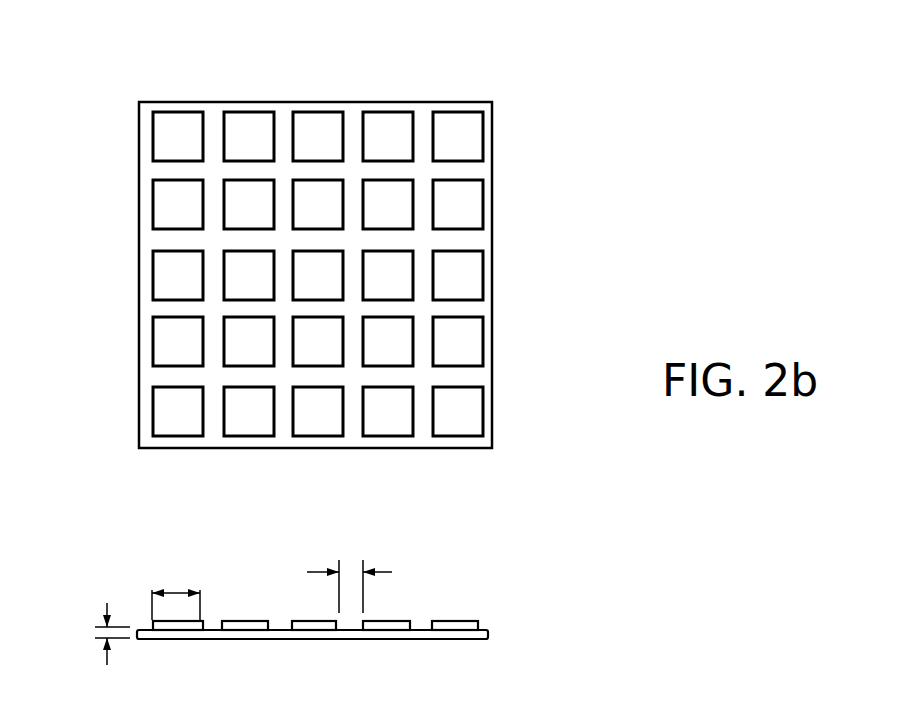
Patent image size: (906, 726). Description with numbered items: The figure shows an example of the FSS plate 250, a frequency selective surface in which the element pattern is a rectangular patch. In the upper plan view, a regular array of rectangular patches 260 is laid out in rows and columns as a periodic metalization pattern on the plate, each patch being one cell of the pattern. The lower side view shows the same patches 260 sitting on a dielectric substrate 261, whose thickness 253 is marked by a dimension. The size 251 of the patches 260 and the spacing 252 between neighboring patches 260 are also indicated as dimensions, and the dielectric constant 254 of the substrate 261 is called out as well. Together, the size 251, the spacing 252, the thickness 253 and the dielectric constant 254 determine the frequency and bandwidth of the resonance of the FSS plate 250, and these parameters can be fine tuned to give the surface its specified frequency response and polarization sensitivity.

The FSS plate 250 is at (243, 86).
The patches 260 is at (482, 132).
The size of patches 251 is at (175, 592).
The spacing of patches 252 is at (350, 568).
The thickness of substrate 253 is at (95, 632).
The dielectric constant of substrate 254 is at (170, 640).
The substrate 261 is at (488, 633).